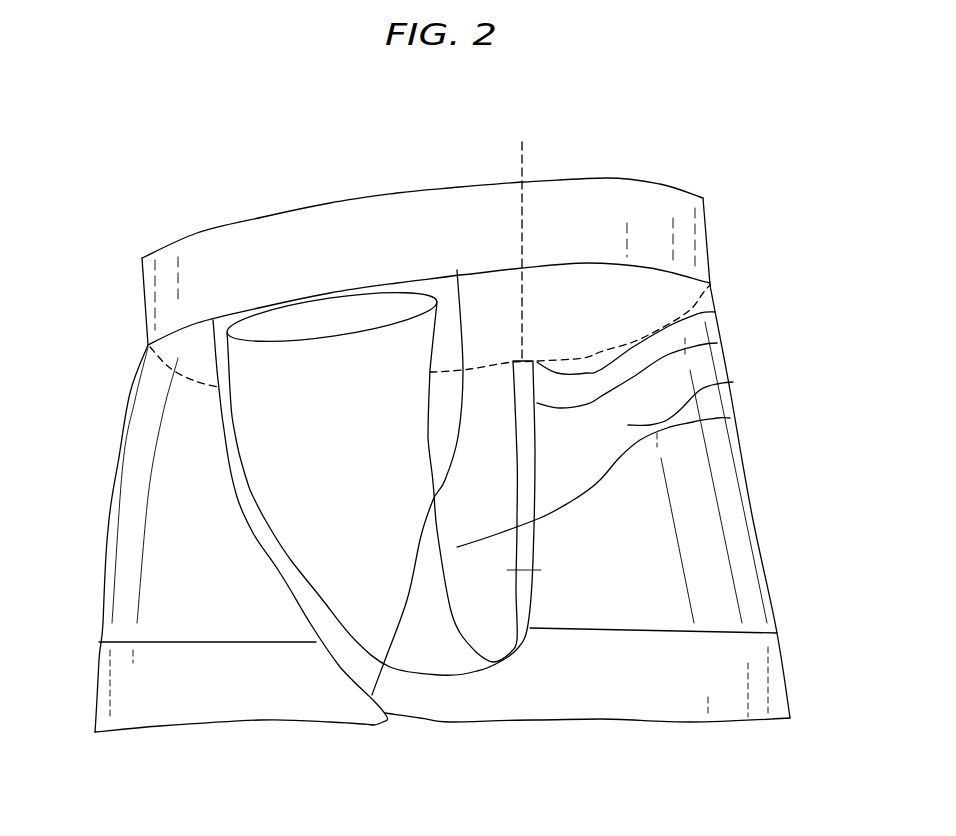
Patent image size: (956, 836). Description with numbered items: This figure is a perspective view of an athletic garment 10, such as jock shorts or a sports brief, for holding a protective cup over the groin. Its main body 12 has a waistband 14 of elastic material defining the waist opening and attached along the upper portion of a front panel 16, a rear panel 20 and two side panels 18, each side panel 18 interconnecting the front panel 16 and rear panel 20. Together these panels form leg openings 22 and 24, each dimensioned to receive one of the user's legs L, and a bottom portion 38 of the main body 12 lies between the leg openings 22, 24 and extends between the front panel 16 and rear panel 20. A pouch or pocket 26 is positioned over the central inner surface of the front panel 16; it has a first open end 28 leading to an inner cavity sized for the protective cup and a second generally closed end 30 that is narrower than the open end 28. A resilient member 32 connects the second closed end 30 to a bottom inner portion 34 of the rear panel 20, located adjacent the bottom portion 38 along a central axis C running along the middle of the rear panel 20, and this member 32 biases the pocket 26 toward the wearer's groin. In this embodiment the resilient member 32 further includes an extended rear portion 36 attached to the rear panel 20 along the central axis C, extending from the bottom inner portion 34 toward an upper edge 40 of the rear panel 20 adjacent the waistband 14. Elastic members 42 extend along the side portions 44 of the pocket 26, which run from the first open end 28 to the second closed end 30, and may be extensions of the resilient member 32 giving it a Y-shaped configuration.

The athletic garment 10 is at (447, 116).
The main body 12 is at (657, 163).
The waistband 14 is at (220, 260).
The front panel 16 is at (153, 618).
The side panels 18 is at (103, 570).
The rear panel 20 is at (733, 382).
The leg opening 22 is at (127, 680).
The leg opening 24 is at (723, 698).
The pouch or pocket 26 is at (347, 560).
The first open end 28 is at (318, 320).
The second closed end 30 is at (440, 657).
The resilient member 32 is at (527, 640).
The bottom inner portion 34 is at (568, 590).
The extended rear portion 36 is at (717, 343).
The bottom portion 38 is at (490, 635).
The upper edge 40 is at (715, 312).
The elastic members 42 is at (730, 418).
The side portions 44 is at (240, 473).
The central axis C is at (523, 158).
The user's legs L is at (130, 733).